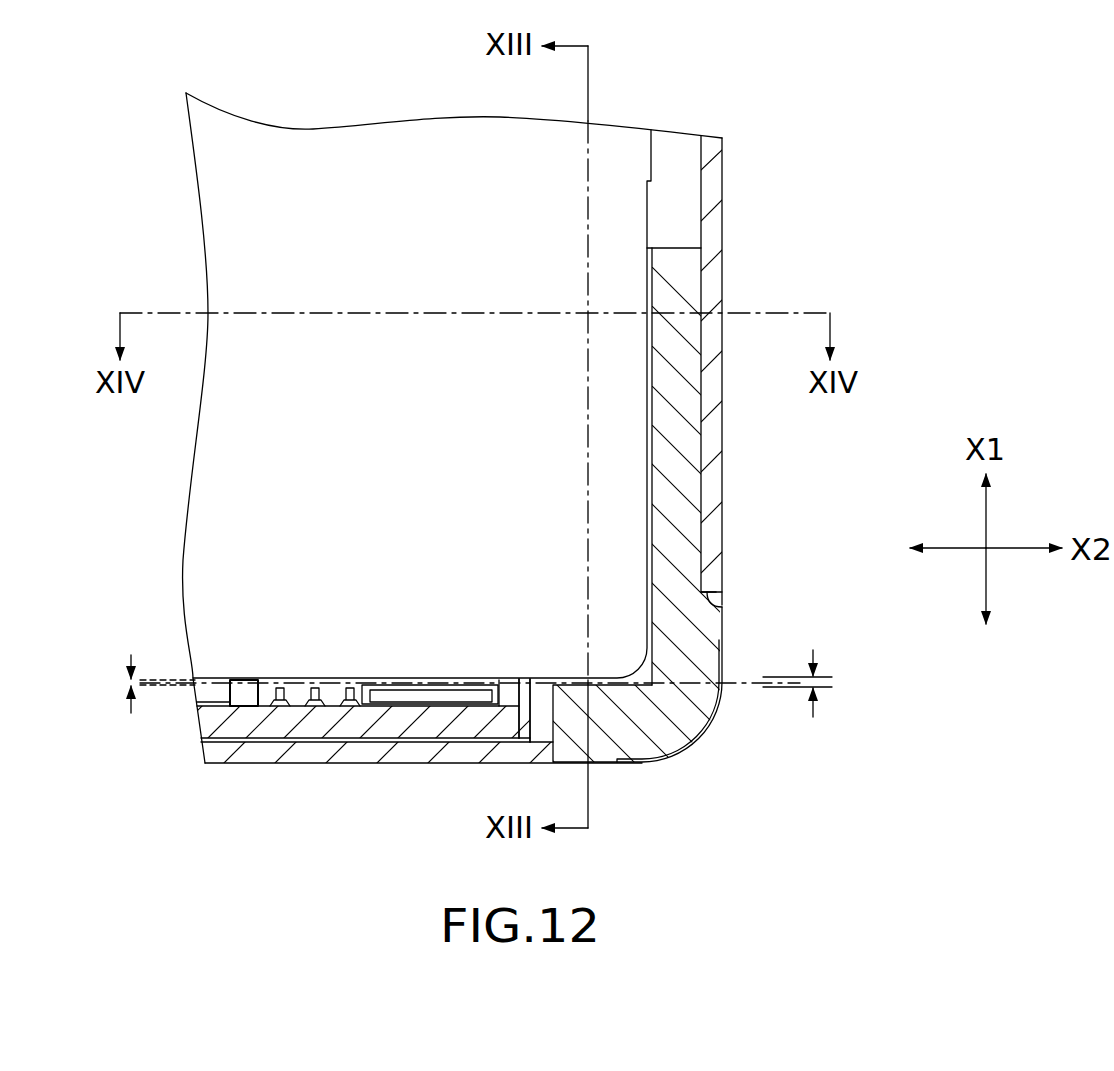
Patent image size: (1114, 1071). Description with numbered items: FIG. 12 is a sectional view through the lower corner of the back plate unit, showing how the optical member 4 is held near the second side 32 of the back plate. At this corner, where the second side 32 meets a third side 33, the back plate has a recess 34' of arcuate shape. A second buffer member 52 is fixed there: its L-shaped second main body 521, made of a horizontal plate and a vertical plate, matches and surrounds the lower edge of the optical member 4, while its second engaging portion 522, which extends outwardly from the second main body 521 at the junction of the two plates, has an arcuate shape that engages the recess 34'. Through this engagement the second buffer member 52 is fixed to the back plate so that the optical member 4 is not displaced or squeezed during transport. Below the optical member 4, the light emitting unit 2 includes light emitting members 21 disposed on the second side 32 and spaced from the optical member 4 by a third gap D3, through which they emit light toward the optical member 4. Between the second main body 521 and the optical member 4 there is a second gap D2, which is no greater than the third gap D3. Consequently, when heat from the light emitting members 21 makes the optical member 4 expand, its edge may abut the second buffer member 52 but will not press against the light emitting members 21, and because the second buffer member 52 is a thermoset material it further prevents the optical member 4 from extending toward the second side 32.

The light emitting unit 2 is at (226, 714).
The light emitting member 21 is at (238, 688).
The second side 32 is at (372, 765).
The third side 33 is at (722, 487).
The recess 34' is at (755, 582).
The optical member 4 is at (282, 493).
The second buffer member 52 is at (692, 662).
The second main body 521 is at (676, 455).
The second engaging portion 522 is at (688, 705).
The second gap D2 is at (819, 683).
The third gap D3 is at (137, 684).